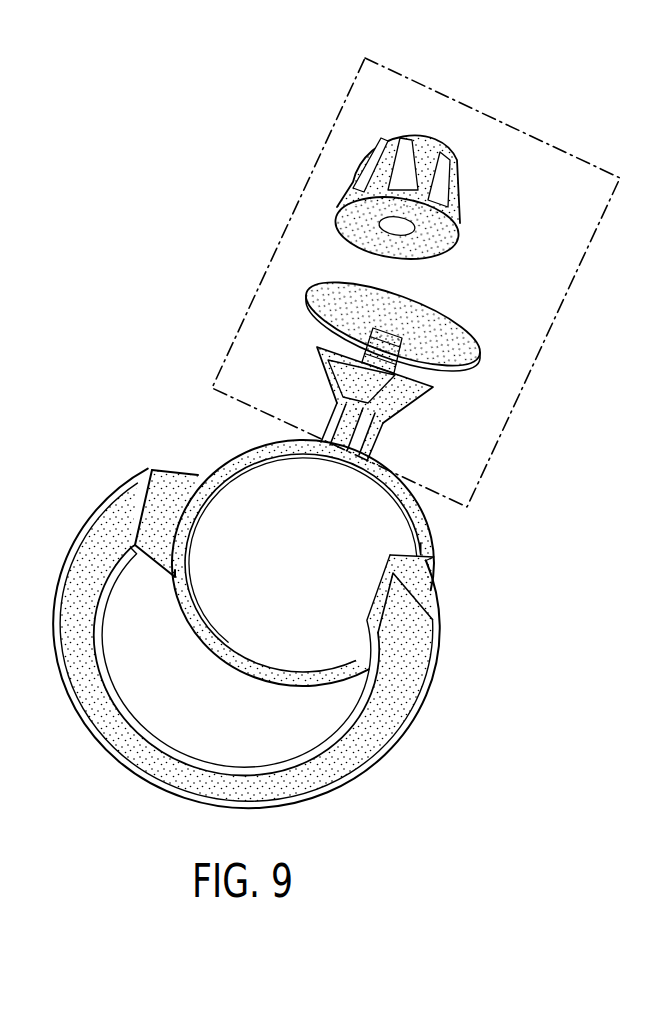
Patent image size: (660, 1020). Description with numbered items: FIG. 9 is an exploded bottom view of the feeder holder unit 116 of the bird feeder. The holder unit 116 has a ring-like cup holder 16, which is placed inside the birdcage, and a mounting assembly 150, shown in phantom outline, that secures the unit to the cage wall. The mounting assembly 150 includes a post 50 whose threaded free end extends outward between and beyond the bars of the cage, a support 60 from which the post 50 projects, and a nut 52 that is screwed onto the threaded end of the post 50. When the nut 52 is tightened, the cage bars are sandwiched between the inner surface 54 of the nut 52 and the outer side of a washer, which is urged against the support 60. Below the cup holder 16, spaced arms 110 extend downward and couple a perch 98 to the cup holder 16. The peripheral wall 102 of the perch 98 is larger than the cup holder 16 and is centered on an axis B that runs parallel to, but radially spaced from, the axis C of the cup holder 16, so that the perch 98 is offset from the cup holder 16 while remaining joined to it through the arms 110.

The cup holder 16 is at (418, 541).
The post 50 is at (382, 330).
The nut 52 is at (447, 189).
The inner surface 54 is at (416, 201).
The support 60 is at (410, 393).
The perch 98 is at (362, 738).
The peripheral wall 102 is at (415, 667).
The spaced arms 110 is at (160, 482).
The holder unit 116 is at (176, 362).
The mounting assembly 150 is at (545, 350).